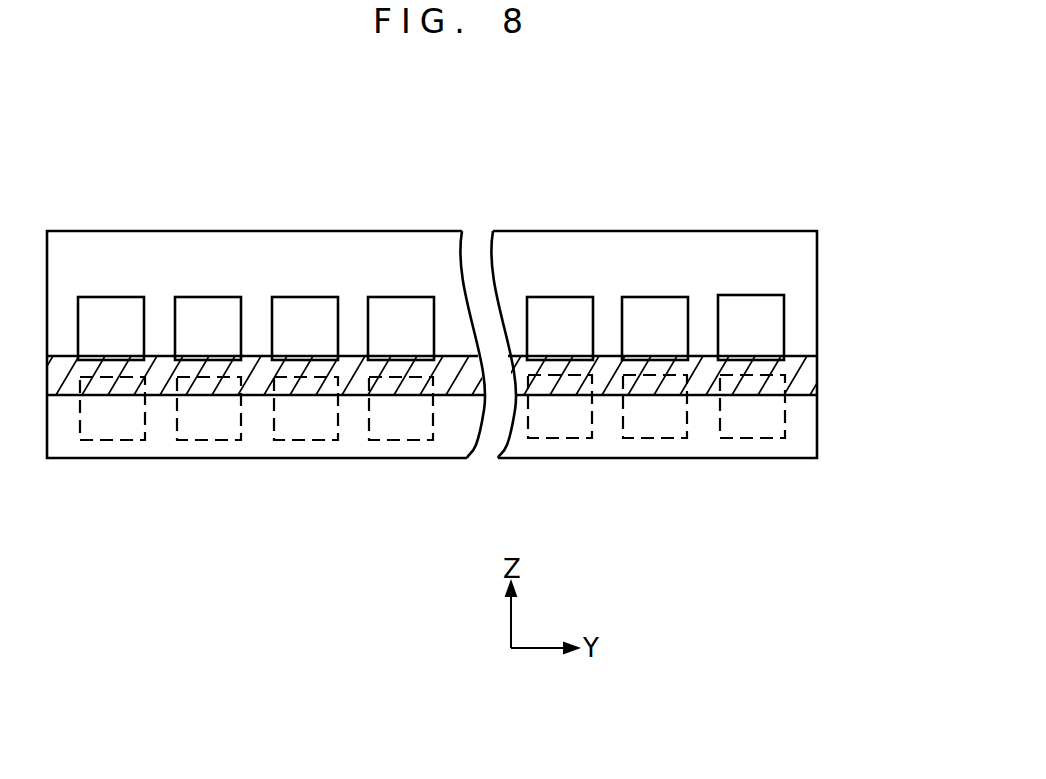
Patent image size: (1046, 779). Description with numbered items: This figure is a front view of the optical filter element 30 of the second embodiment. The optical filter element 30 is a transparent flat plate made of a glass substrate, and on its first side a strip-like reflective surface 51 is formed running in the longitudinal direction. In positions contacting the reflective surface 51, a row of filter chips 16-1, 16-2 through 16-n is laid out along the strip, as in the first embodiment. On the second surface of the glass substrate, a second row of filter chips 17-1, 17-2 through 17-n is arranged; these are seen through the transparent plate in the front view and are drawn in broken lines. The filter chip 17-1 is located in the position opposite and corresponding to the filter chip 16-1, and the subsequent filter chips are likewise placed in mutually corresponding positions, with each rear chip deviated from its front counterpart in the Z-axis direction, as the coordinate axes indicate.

The optical filter element 30 is at (398, 231).
The reflective surface 51 is at (802, 372).
The filter chip 16-1 is at (103, 297).
The filter chip 16-2 is at (203, 297).
The filter chip 16-n is at (753, 295).
The filter chip 17-1 is at (110, 441).
The filter chip 17-2 is at (203, 441).
The filter chip 17-n is at (746, 439).